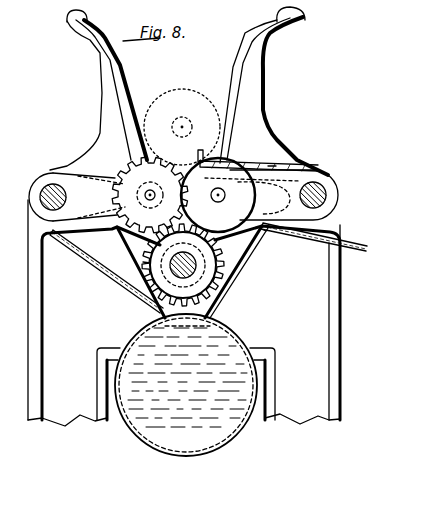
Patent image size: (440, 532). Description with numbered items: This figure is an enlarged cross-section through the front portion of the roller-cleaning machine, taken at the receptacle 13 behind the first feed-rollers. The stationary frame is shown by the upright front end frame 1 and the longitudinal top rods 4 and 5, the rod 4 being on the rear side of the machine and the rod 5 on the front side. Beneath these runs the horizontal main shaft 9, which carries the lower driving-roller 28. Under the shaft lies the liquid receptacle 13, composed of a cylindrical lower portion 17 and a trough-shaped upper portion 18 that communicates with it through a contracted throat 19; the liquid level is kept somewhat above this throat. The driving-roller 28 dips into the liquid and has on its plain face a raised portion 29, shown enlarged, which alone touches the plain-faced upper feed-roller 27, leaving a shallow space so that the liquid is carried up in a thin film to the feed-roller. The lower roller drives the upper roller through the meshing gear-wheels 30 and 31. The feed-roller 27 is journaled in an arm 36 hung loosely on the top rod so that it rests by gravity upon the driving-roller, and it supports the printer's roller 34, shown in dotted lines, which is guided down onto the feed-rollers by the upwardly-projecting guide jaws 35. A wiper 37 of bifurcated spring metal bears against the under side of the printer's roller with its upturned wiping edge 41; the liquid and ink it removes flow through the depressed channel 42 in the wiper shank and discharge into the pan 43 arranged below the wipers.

The front end frame 1 is at (310, 397).
The longitudinal top rod 4 is at (45, 182).
The longitudinal top rod 5 is at (327, 197).
The main shaft 9 is at (181, 265).
The liquid receptacle 13 is at (195, 441).
The lower portion 17 is at (230, 465).
The trough-shaped upper portion 18 is at (87, 278).
The contracted throat 19 is at (200, 324).
The plain-faced feed-roller 27 is at (218, 195).
The lower driving-roller 28 is at (218, 254).
The raised portion 29 is at (143, 262).
The gear-wheel 30 is at (226, 273).
The gear-wheel 31 is at (148, 191).
The printer's roller 34 is at (196, 87).
The guide jaws 35 is at (250, 60).
The arm 36 is at (101, 197).
The wiper 37 is at (259, 161).
The wiping edge 41 is at (210, 145).
The depressed channel 42 is at (273, 167).
The pan 43 is at (386, 268).